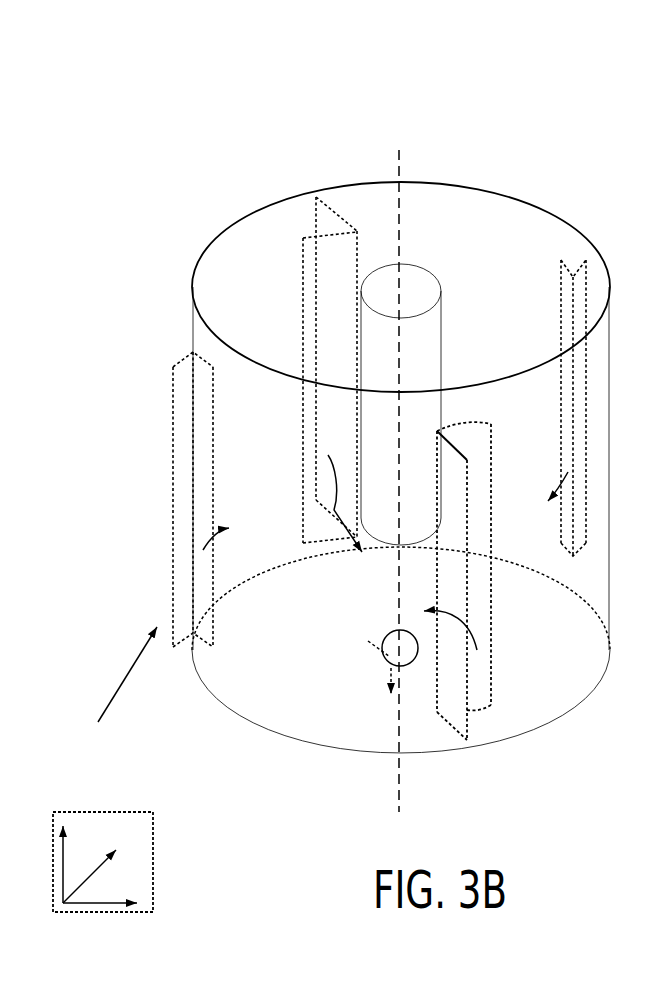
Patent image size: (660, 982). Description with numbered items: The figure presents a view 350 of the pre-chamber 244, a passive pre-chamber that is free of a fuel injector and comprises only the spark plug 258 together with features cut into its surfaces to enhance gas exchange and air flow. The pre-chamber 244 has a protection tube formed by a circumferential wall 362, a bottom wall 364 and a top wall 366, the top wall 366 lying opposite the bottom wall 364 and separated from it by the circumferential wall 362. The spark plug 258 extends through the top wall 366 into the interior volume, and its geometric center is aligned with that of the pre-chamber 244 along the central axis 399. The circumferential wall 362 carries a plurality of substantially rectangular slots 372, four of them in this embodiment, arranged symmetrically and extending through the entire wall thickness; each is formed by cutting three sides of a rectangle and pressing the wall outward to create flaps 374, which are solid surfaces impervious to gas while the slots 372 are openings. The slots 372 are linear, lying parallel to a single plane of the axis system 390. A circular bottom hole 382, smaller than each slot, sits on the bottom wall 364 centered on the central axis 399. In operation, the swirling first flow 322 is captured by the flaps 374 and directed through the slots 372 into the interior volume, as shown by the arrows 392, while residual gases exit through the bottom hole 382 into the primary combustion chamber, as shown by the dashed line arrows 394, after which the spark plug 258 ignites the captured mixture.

The pre-chamber 244 is at (377, 454).
The spark plug 258 is at (440, 334).
The first flow 322 is at (135, 672).
The view 350 is at (570, 71).
The circumferential wall 362 is at (193, 336).
The bottom wall 364 is at (320, 701).
The top wall 366 is at (480, 244).
The slots 372 is at (199, 499).
The flaps 374 is at (173, 450).
The bottom hole 382 is at (405, 668).
The axis system 390 is at (153, 830).
The arrows 392 is at (213, 533).
The dashed line arrows 394 is at (383, 645).
The central axis 399 is at (398, 176).